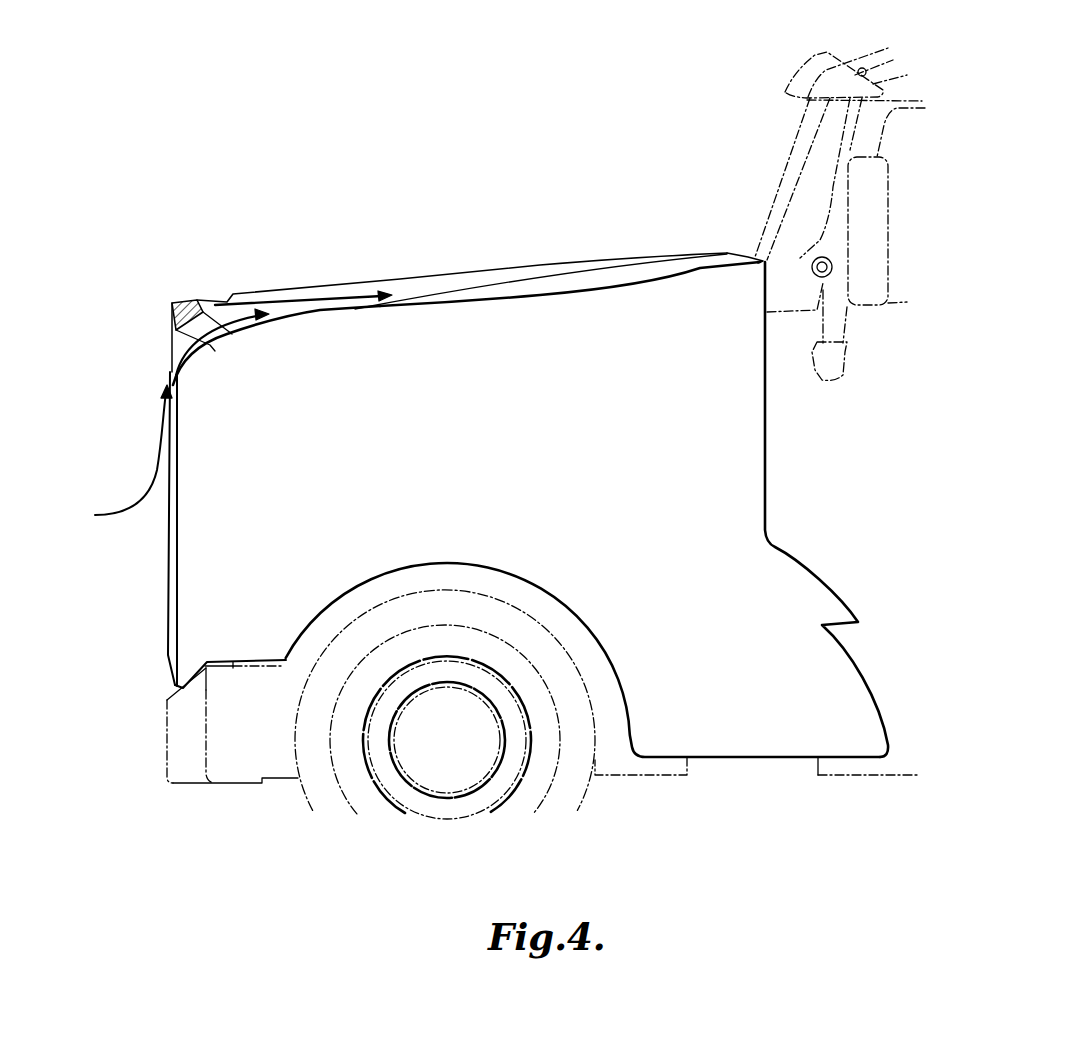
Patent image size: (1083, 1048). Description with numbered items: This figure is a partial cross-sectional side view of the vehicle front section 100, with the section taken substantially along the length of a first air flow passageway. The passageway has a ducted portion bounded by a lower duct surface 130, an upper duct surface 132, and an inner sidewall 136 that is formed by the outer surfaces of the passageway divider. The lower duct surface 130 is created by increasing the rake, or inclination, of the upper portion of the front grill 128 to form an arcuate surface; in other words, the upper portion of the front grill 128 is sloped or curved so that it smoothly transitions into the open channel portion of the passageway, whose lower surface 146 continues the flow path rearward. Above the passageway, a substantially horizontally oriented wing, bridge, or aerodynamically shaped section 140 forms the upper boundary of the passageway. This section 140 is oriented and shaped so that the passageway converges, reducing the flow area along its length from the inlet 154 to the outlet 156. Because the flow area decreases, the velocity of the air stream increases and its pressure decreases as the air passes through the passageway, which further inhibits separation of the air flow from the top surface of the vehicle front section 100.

The vehicle front section 100 is at (241, 204).
The front grill 128 is at (170, 593).
The lower duct surface 130 is at (287, 323).
The upper duct surface 132 is at (230, 332).
The inner sidewall 136 is at (207, 310).
The aerodynamically shaped section 140 is at (237, 302).
The lower surface of open channel portion 146 is at (538, 295).
The inlet 154 is at (185, 348).
The outlet 156 is at (285, 308).